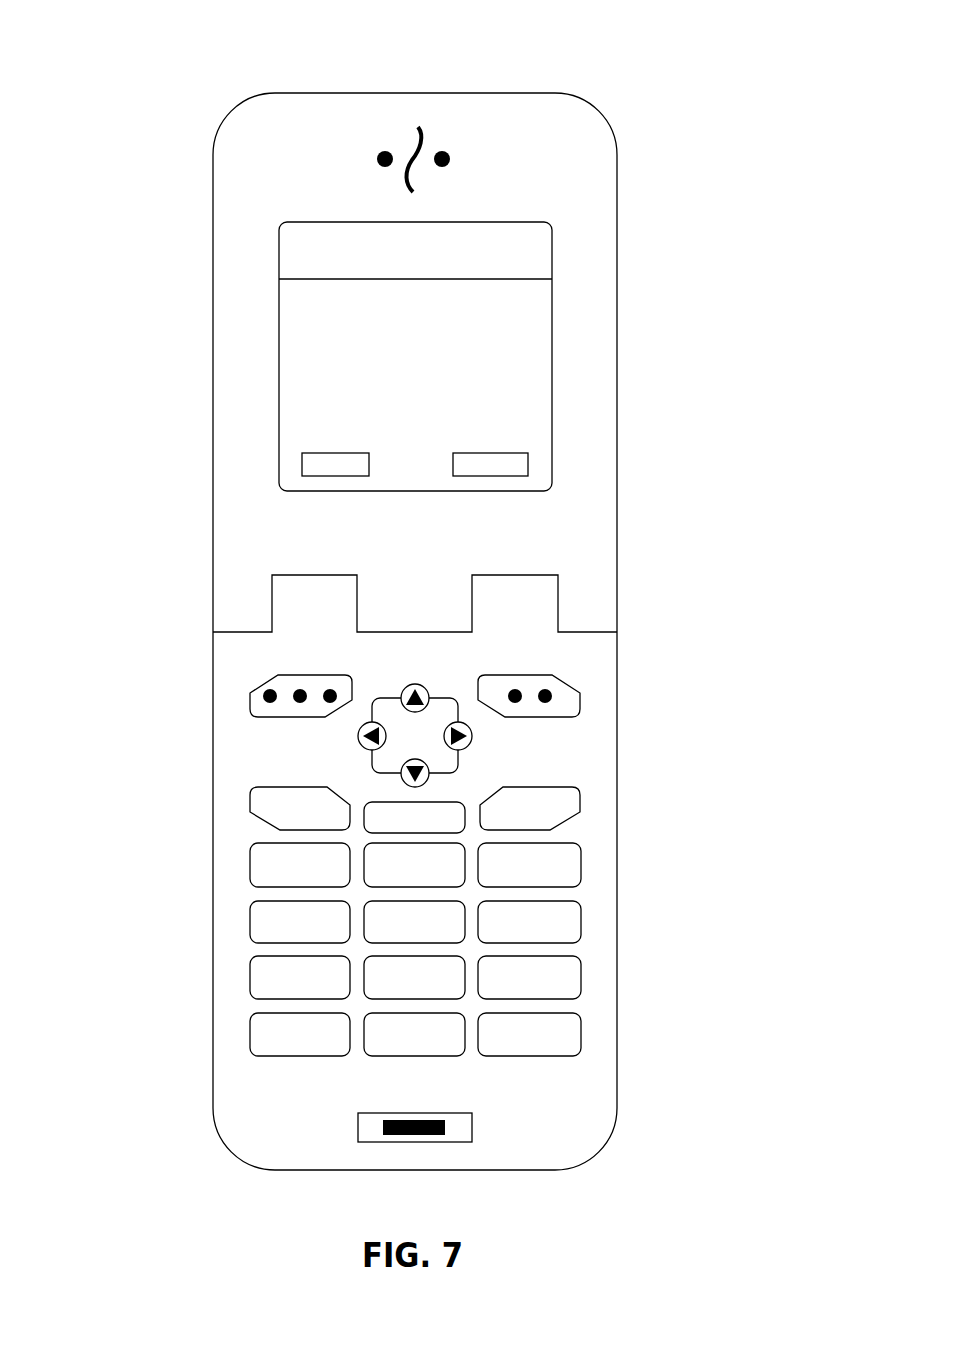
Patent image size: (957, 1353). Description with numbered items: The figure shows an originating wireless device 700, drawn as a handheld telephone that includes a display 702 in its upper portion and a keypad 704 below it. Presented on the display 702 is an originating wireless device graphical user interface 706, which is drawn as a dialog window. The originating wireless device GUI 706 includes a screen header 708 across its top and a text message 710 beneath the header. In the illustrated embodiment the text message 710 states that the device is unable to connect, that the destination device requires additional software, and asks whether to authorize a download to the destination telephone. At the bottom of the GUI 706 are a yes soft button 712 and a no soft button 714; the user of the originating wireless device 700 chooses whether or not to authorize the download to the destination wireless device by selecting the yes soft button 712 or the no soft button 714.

The originating wireless device 700 is at (187, 112).
The display 702 is at (512, 221).
The keypad 704 is at (567, 743).
The originating wireless device graphical user interface 706 is at (532, 387).
The screen header 708 is at (482, 270).
The text message 710 is at (413, 403).
The yes soft button 712 is at (333, 477).
The no soft button 714 is at (492, 477).